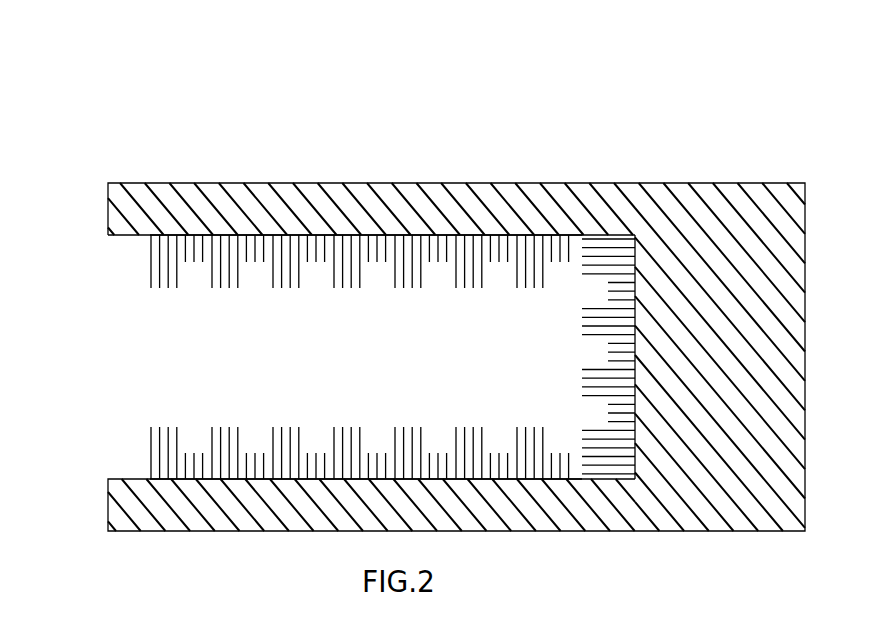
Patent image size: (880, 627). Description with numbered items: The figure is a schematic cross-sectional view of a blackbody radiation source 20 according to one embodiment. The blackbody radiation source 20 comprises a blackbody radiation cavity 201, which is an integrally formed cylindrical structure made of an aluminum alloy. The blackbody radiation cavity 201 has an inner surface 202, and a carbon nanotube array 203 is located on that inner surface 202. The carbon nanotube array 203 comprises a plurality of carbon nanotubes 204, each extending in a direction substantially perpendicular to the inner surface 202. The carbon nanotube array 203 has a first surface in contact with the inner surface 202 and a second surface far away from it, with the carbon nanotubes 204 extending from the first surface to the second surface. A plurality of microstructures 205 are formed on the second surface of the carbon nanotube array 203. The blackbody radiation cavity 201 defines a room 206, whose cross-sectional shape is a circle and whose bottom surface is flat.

The blackbody radiation source 20 is at (447, 75).
The blackbody radiation cavity 201 is at (588, 183).
The inner surface 202 is at (128, 478).
The carbon nanotube array 203 is at (153, 247).
The carbon nanotubes 204 is at (236, 288).
The microstructures 205 is at (380, 435).
The room 206 is at (178, 372).